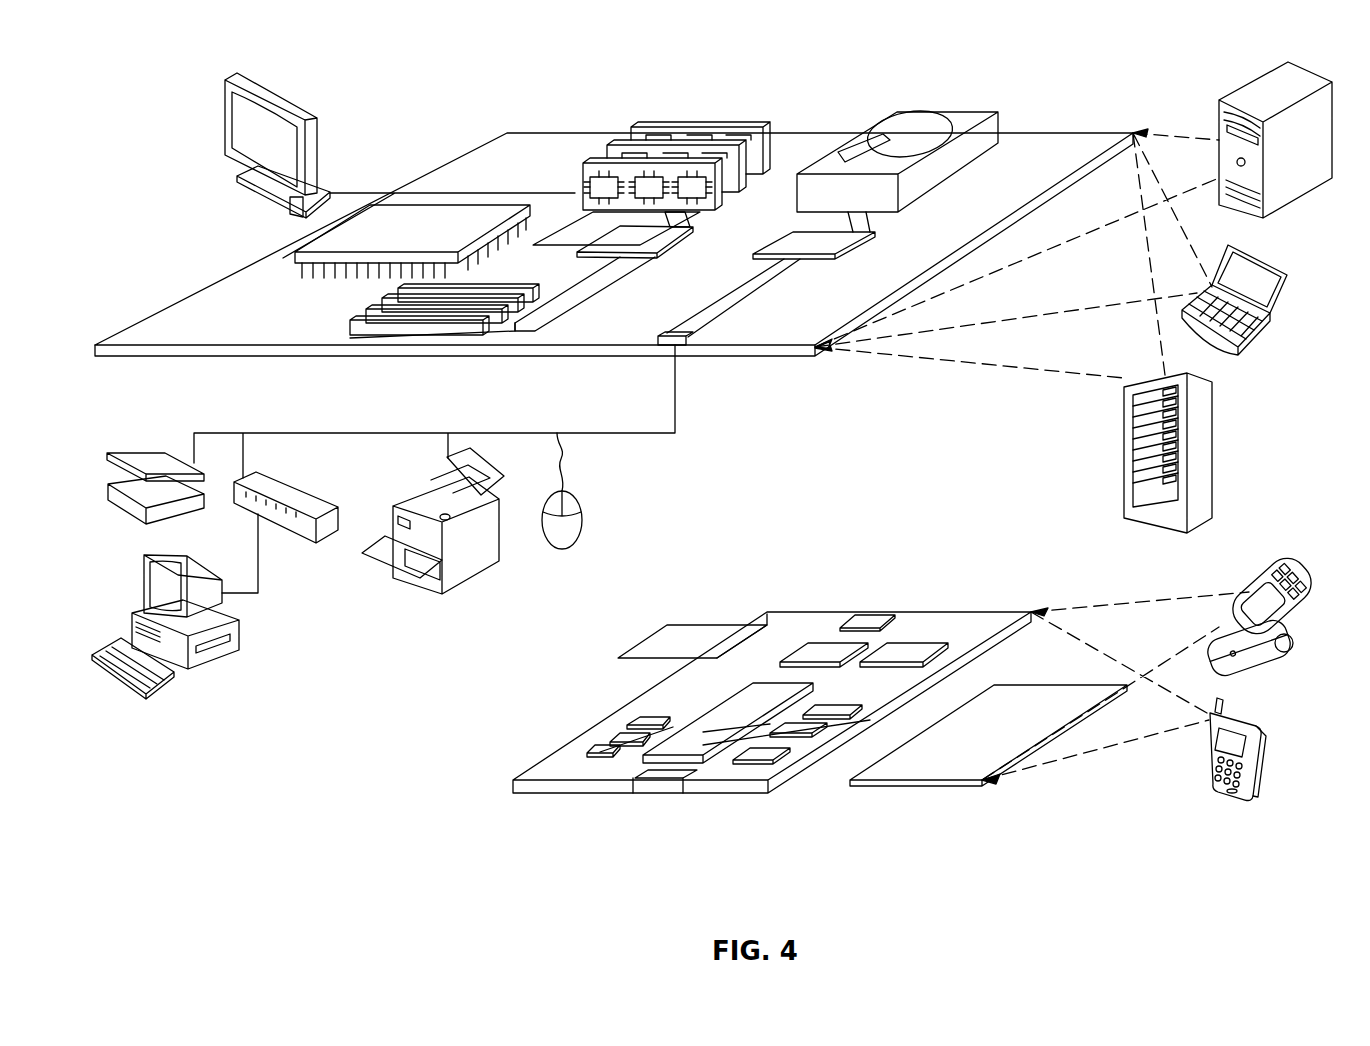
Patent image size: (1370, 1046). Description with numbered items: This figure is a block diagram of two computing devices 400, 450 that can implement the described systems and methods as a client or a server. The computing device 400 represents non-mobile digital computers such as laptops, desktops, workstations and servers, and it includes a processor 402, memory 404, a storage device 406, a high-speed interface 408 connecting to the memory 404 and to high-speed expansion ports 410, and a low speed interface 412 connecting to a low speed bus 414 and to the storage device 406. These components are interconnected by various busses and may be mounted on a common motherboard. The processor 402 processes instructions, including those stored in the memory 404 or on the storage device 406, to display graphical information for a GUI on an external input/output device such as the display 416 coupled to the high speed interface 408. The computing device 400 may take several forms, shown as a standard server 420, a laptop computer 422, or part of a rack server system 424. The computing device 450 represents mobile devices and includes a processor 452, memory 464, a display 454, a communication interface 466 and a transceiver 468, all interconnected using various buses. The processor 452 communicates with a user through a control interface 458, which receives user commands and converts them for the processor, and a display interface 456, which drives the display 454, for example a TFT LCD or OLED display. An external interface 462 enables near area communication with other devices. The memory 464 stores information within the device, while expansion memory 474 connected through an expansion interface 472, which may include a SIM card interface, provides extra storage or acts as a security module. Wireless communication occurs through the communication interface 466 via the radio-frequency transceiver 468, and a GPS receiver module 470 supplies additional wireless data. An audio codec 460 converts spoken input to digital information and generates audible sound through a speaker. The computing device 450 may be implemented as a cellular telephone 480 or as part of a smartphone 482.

The computing device 400 is at (432, 106).
The processor 402 is at (262, 257).
The memory 404 is at (641, 124).
The storage device 406 is at (895, 112).
The high-speed interface 408 is at (608, 238).
The high-speed expansion ports 410 is at (373, 316).
The low speed interface 412 is at (796, 240).
The low speed bus 414 is at (683, 341).
The display 416 is at (228, 78).
The standard server 420 is at (1219, 118).
The laptop computer 422 is at (1299, 284).
The rack server system 424 is at (1124, 480).
The computing device 450 is at (490, 793).
The processor 452 is at (698, 748).
The display 454 is at (943, 763).
The display interface 456 is at (768, 753).
The control interface 458 is at (807, 729).
The audio codec 460 is at (833, 711).
The external interface 462 is at (662, 779).
The memory 464 is at (612, 736).
The communication interface 466 is at (823, 650).
The transceiver 468 is at (905, 650).
The GPS receiver module 470 is at (877, 625).
The expansion interface 472 is at (748, 628).
The expansion memory 474 is at (673, 628).
The cellular telephone 480 is at (1273, 564).
The smartphone 482 is at (1211, 754).